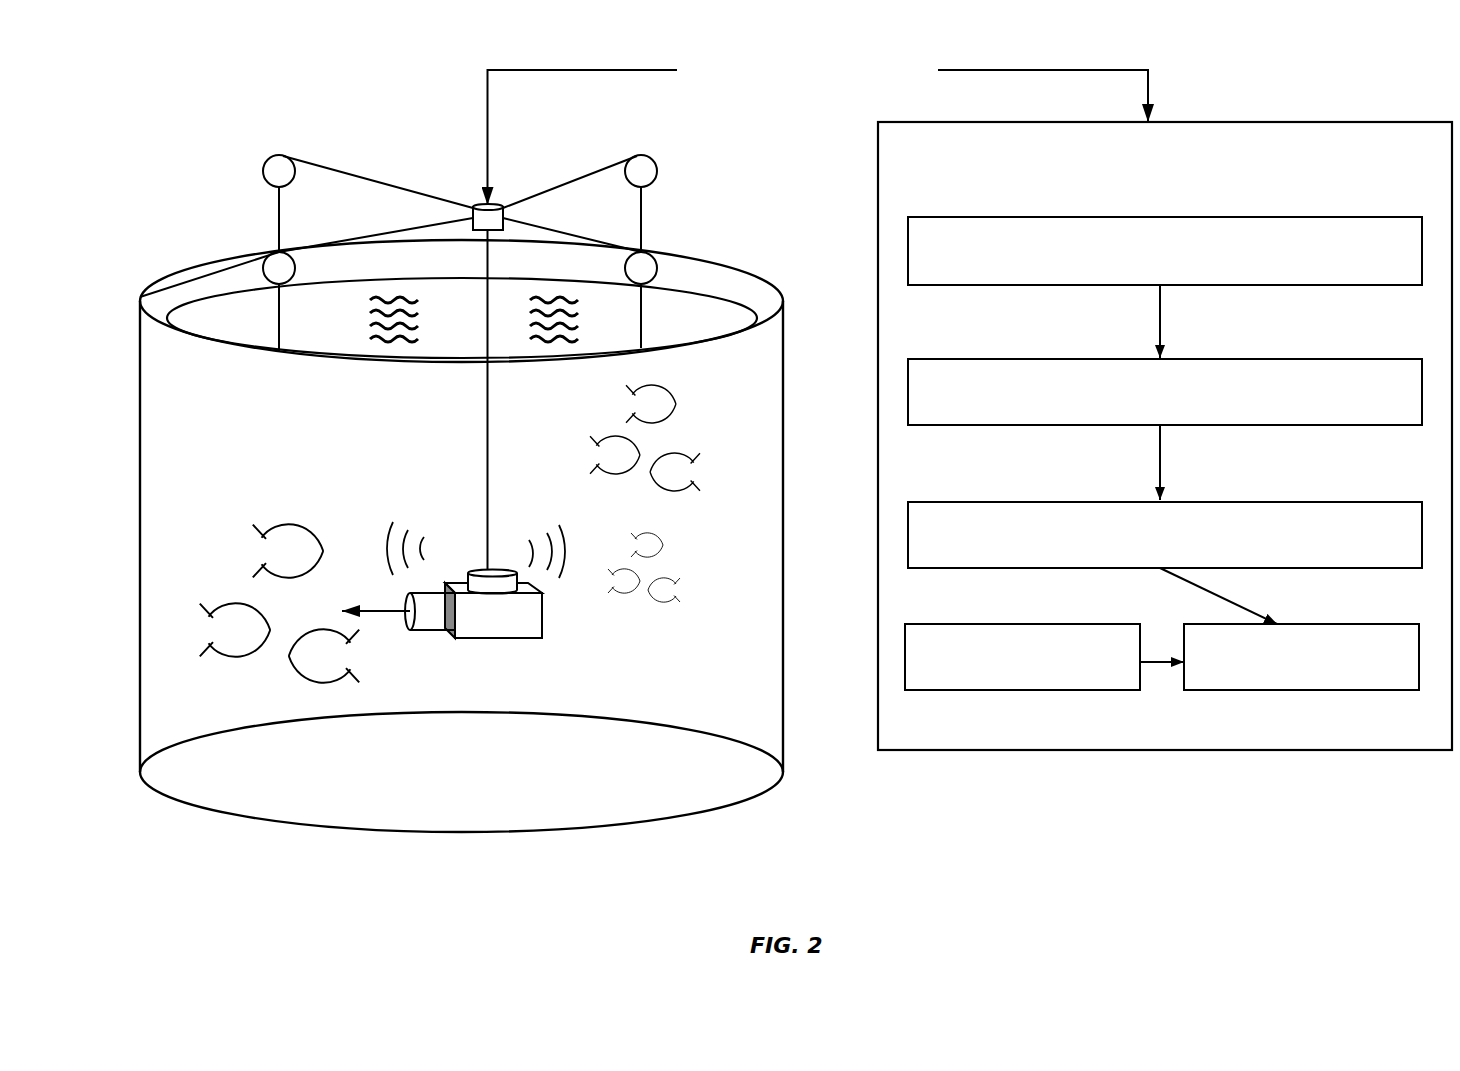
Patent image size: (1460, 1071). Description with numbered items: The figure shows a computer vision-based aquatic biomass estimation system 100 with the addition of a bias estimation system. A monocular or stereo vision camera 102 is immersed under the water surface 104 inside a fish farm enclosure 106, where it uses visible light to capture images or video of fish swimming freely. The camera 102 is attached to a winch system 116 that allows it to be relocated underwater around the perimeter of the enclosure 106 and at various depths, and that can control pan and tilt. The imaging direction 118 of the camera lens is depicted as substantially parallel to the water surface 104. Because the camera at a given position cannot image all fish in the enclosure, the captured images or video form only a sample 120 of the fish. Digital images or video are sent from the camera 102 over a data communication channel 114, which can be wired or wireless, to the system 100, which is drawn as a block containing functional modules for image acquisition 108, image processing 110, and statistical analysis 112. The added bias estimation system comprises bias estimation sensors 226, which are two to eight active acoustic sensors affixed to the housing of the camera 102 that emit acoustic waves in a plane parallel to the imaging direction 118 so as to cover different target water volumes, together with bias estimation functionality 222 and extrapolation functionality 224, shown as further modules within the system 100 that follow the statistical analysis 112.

The computer vision-based aquatic biomass estimation system 100 is at (1228, 184).
The camera 102 is at (542, 615).
The water surface 104 is at (663, 312).
The fish farm enclosure 106 is at (783, 657).
The image acquisition 108 is at (1288, 262).
The image processing 110 is at (1290, 404).
The statistical analysis 112 is at (1293, 546).
The data communication channel 114 is at (818, 129).
The winch system 116 is at (455, 188).
The imaging direction 118 is at (385, 611).
The sample 120 is at (263, 682).
The bias estimation functionality 222 is at (1042, 683).
The extrapolation functionality 224 is at (1397, 668).
The bias estimation sensors 226 is at (460, 560).